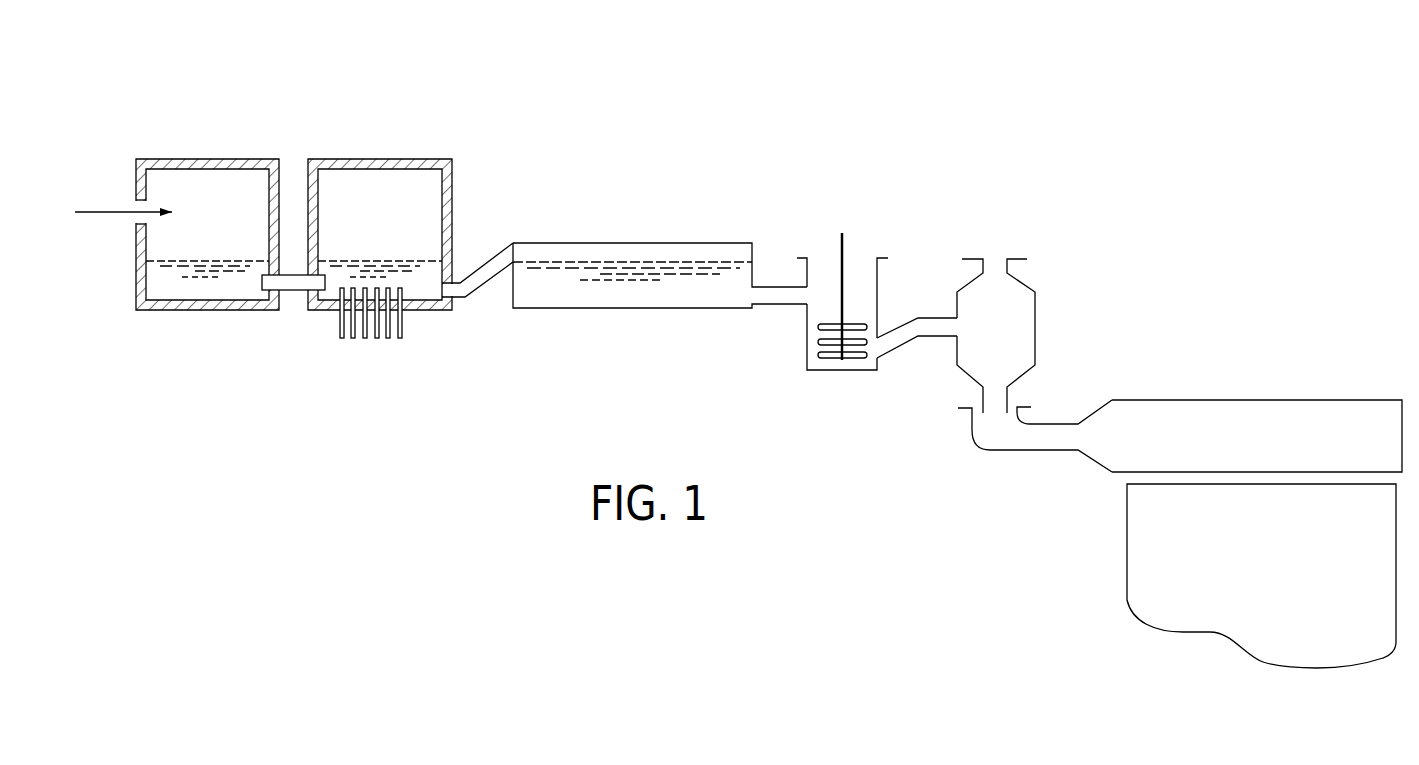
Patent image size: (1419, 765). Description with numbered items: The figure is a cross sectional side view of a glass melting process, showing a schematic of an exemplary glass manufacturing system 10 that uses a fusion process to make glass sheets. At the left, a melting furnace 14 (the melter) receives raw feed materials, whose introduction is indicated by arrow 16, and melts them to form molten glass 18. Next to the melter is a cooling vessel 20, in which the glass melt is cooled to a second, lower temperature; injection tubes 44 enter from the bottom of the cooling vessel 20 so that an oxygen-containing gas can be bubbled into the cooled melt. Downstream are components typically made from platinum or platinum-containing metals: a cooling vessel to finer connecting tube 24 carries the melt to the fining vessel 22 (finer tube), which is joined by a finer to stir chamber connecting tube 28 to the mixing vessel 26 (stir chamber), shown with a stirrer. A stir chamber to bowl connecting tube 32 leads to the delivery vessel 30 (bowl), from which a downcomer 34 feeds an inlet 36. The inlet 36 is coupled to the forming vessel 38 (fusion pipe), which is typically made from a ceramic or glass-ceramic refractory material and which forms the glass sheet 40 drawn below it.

The glass manufacturing system 10 is at (877, 122).
The melting furnace 14 is at (183, 152).
The arrow 16 is at (123, 197).
The molten glass 18 is at (222, 258).
The cooling vessel 20 is at (410, 156).
The fining vessel 22 is at (725, 240).
The cooling vessel to finer connecting tube 24 is at (483, 285).
The mixing vessel 26 is at (882, 303).
The finer to stir chamber connecting tube 28 is at (780, 283).
The delivery vessel 30 is at (1037, 310).
The stir chamber to bowl connecting tube 32 is at (903, 346).
The downcomer 34 is at (1012, 397).
The inlet 36 is at (1025, 452).
The forming vessel 38 is at (1262, 398).
The glass sheet 40 is at (1125, 557).
The injection tubes 44 is at (340, 345).